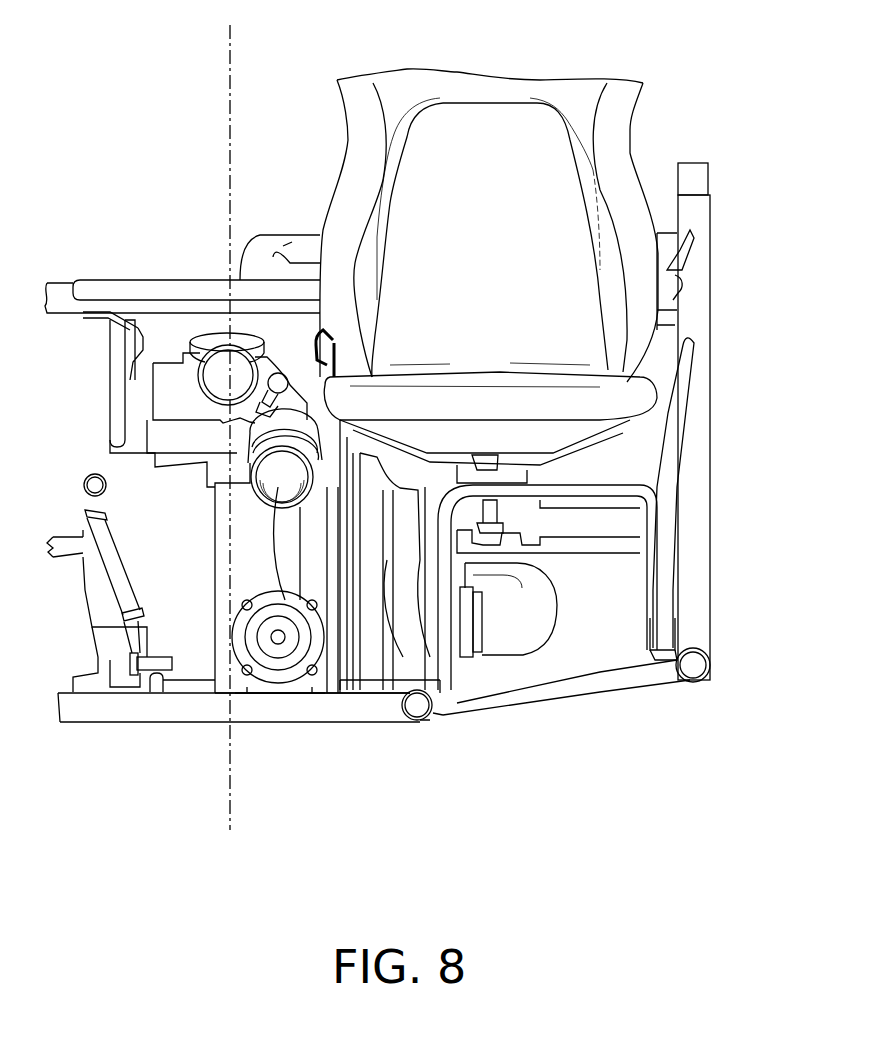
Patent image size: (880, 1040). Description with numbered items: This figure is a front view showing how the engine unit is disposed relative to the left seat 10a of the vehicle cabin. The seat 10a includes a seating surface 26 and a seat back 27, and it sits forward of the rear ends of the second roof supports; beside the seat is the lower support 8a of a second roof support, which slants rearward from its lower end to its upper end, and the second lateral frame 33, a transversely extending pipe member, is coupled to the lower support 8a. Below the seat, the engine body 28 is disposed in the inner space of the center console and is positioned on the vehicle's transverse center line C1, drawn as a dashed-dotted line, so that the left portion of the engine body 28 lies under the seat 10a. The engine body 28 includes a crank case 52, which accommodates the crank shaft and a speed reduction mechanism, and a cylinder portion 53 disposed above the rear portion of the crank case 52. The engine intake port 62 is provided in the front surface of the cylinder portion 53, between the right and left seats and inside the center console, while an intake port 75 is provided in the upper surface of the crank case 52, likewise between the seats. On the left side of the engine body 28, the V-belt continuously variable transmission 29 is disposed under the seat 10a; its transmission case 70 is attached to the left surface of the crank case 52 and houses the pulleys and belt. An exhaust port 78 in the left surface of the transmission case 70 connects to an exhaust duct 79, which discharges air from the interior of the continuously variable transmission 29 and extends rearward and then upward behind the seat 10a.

The center line C1 is at (230, 40).
The seat 10a is at (473, 138).
The seat back 27 is at (557, 280).
The seating surface 26 is at (593, 420).
The lower support 8a is at (697, 410).
The second lateral frame 33 is at (152, 290).
The engine intake port 62 is at (213, 345).
The cylinder portion 53 is at (153, 395).
The crank case 52 is at (112, 482).
The engine body 28 is at (185, 675).
The intake port 75 is at (303, 640).
The V-belt continuously variable transmission 29 is at (385, 673).
The transmission case 70 is at (413, 623).
The exhaust port 78 is at (483, 625).
The exhaust duct 79 is at (537, 637).